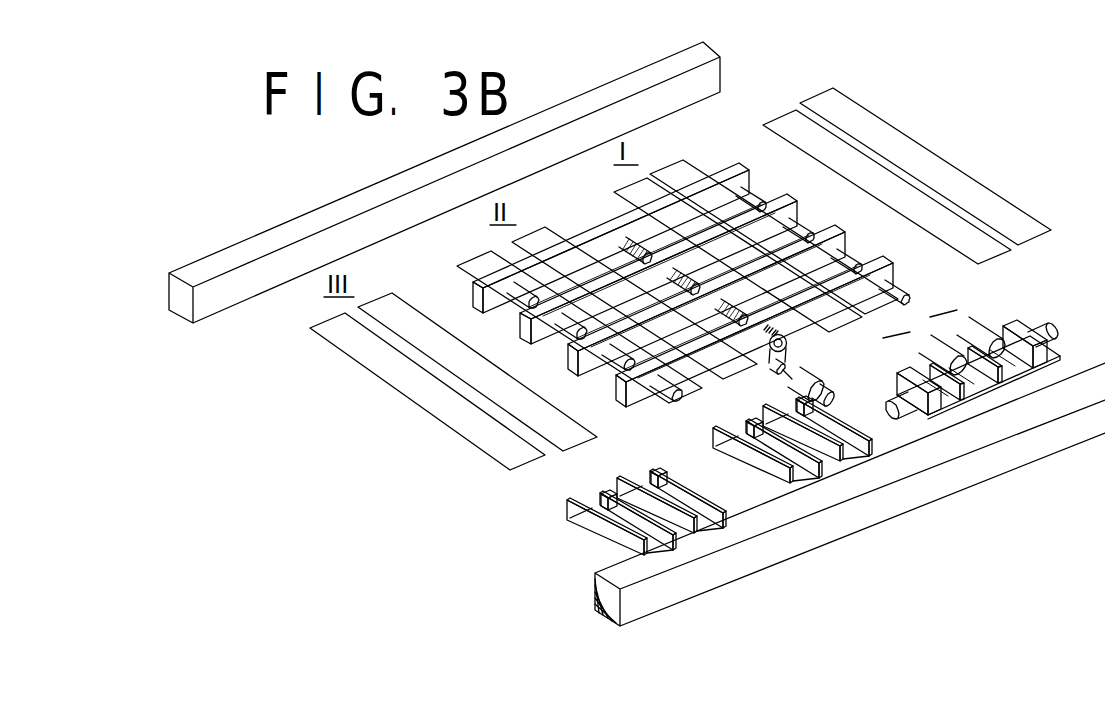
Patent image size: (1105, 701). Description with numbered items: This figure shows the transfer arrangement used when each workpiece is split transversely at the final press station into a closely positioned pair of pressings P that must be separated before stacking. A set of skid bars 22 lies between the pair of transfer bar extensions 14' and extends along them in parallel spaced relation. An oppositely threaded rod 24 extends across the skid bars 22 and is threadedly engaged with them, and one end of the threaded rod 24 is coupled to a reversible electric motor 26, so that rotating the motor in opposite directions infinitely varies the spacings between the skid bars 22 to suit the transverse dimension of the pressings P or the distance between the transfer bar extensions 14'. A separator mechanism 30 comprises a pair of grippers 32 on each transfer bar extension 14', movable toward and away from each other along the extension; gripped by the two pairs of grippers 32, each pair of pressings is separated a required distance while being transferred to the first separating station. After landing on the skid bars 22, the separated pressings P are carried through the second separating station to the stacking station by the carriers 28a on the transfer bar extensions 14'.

The transfer bar extension 14' is at (637, 334).
The pressing P is at (897, 130).
The skid bar 22 is at (492, 307).
The oppositely threaded rod 24 is at (742, 306).
The reversible electric motor 26 is at (806, 376).
The carrier 28a is at (600, 489).
The separator mechanism 30 is at (1027, 311).
The gripper 32 is at (950, 333).